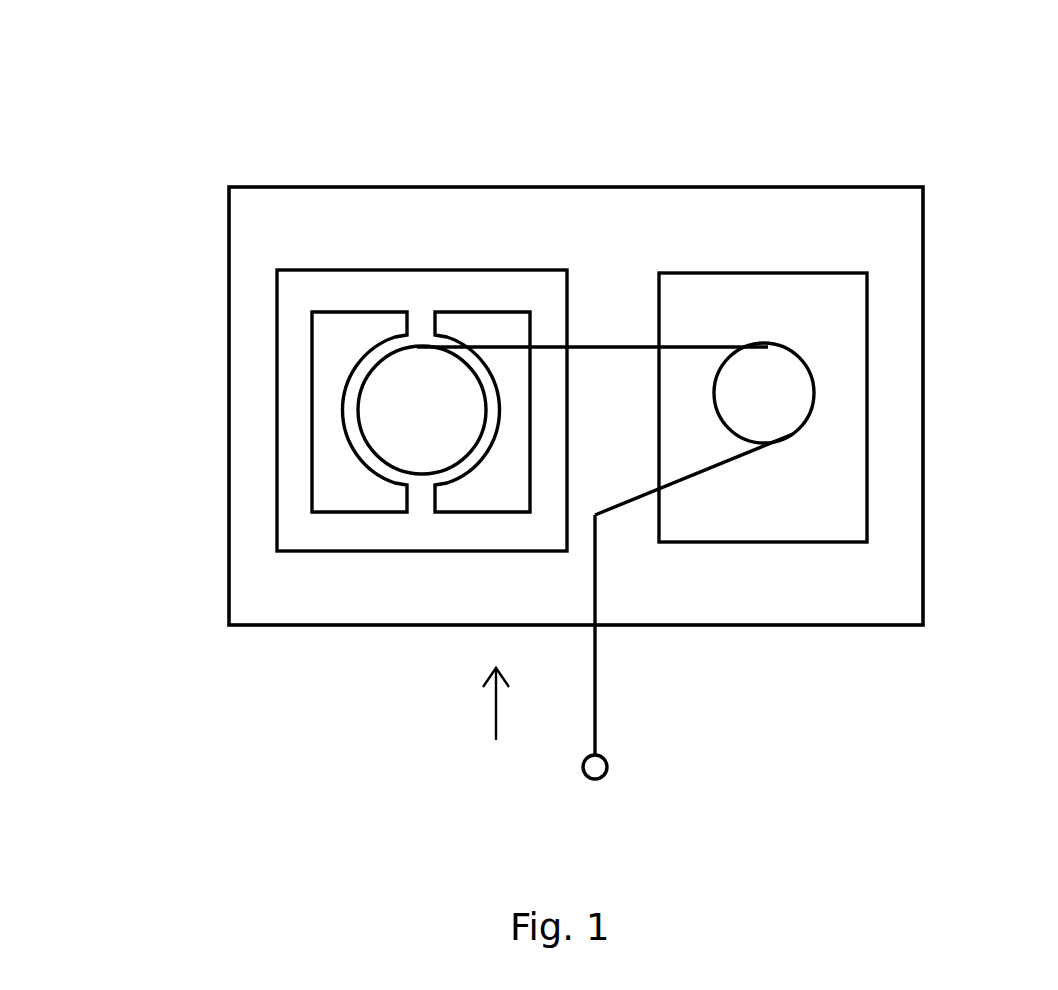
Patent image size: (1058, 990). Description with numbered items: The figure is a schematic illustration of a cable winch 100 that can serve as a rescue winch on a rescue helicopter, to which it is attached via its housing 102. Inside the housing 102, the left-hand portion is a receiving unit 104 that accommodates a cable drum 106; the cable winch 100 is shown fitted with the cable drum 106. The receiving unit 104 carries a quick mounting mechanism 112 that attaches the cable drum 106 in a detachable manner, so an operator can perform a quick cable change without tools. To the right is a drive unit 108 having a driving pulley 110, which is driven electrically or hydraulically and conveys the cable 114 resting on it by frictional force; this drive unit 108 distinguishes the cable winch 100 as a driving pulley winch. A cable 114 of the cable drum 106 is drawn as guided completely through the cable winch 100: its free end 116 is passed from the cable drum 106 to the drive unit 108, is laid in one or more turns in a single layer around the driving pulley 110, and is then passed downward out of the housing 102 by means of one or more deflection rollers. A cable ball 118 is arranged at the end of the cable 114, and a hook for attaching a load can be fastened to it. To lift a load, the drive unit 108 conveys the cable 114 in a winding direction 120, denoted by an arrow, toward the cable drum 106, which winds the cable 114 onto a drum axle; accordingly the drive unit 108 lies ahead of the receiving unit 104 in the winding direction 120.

The cable winch 100 is at (357, 160).
The housing 102 is at (630, 185).
The receiving unit 104 is at (468, 268).
The cable drum 106 is at (358, 410).
The drive unit 108 is at (760, 272).
The driving pulley 110 is at (797, 432).
The quick mounting mechanism 112 is at (313, 497).
The cable 114 is at (618, 572).
The free end 116 is at (593, 741).
The cable ball 118 is at (597, 780).
The winding direction 120 is at (493, 713).